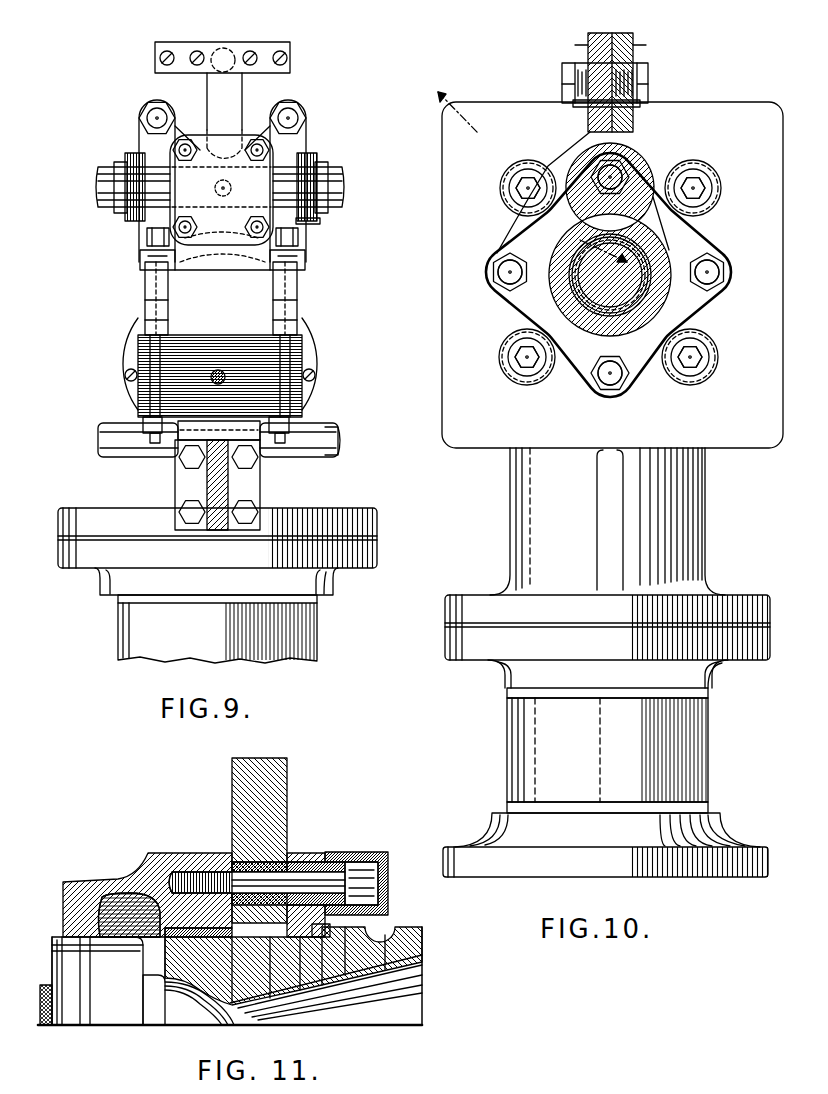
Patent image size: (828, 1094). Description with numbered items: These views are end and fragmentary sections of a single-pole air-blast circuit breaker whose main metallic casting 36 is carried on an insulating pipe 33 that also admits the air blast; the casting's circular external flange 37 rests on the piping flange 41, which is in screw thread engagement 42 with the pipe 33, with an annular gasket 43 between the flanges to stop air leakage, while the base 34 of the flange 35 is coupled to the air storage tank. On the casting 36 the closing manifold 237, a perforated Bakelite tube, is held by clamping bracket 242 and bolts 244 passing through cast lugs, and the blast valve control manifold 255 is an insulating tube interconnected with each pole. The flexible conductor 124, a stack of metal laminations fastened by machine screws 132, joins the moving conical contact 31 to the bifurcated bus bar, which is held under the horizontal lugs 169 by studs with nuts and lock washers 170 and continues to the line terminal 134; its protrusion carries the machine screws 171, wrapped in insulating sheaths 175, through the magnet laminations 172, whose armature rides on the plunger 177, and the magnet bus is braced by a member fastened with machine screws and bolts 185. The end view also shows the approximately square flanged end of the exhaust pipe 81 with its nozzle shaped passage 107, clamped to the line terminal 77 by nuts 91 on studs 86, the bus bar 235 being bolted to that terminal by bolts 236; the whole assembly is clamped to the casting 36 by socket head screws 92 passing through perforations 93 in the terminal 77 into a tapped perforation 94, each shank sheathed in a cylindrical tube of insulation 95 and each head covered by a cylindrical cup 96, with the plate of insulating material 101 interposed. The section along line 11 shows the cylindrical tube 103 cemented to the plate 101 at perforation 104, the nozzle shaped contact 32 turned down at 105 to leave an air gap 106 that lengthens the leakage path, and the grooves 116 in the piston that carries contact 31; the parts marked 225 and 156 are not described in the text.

In FIG. 9, the mounting plate 225 is at (268, 52).
In FIG. 9, the supporting bar 156 is at (242, 94).
In FIG. 9, the bolts 244 is at (186, 142).
In FIG. 9, the clamping bracket 242 is at (221, 190).
In FIG. 9, the flexible conductor 124 is at (133, 160).
In FIG. 11, the flexible conductor 124 is at (42, 1028).
In FIG. 9, the closing manifold 237 is at (328, 188).
In FIG. 9, the machine screws 132 is at (321, 220).
In FIG. 9, the nuts and lock washers 170 is at (147, 238).
In FIG. 9, the horizontal lugs 169 is at (305, 262).
In FIG. 9, the insulating sheaths 175 is at (146, 304).
In FIG. 9, the plunger 177 is at (219, 370).
In FIG. 9, the magnet laminations 172 is at (303, 356).
In FIG. 9, the blast valve control manifold 255 is at (332, 438).
In FIG. 9, the machine screws 171 is at (218, 437).
In FIG. 9, the machine screws and bolts 185 is at (189, 506).
In FIG. 9, the line terminal 134 is at (221, 526).
In FIG. 9, the external flange 37 is at (352, 509).
In FIG. 10, the external flange 37 is at (753, 591).
In FIG. 9, the annular gasket 43 is at (377, 540).
In FIG. 10, the annular gasket 43 is at (770, 625).
In FIG. 9, the piping flange 41 is at (377, 567).
In FIG. 10, the piping flange 41 is at (770, 658).
In FIG. 9, the screw thread engagement 42 is at (318, 600).
In FIG. 10, the screw thread engagement 42 is at (709, 697).
In FIG. 9, the pipe 33 is at (318, 636).
In FIG. 10, the pipe 33 is at (709, 745).
In FIG. 10, the plate of insulating material 101 is at (718, 110).
In FIG. 11, the plate of insulating material 101 is at (288, 792).
In FIG. 10, the section line 11 is at (533, 176).
In FIG. 10, the line terminal 77 is at (610, 33).
In FIG. 11, the line terminal 77 is at (292, 857).
In FIG. 10, the bus bar 235 is at (588, 50).
In FIG. 10, the bolts 236 is at (648, 81).
In FIG. 10, the exhaust pipe 81 is at (700, 222).
In FIG. 11, the exhaust pipe 81 is at (408, 948).
In FIG. 10, the nozzle shaped passage 107 is at (645, 297).
In FIG. 11, the nozzle shaped passage 107 is at (413, 978).
In FIG. 10, the contact 31 is at (610, 292).
In FIG. 11, the contact 31 is at (157, 1020).
In FIG. 10, the studs 86 is at (622, 158).
In FIG. 10, the nuts 91 is at (612, 178).
In FIG. 10, the cylindrical cup 96 is at (506, 175).
In FIG. 11, the cylindrical cup 96 is at (360, 852).
In FIG. 10, the socket head screws 92 is at (527, 190).
In FIG. 11, the socket head screws 92 is at (375, 880).
In FIG. 10, the main metallic casting 36 is at (706, 487).
In FIG. 11, the main metallic casting 36 is at (143, 857).
In FIG. 10, the flange 35 is at (722, 845).
In FIG. 10, the base 34 is at (701, 878).
In FIG. 11, the base 34 is at (331, 933).
In FIG. 11, the cylindrical tube 103 is at (140, 882).
In FIG. 11, the perforations 93 is at (310, 862).
In FIG. 11, the cylindrical tube of insulation 95 is at (298, 866).
In FIG. 11, the tapped perforation 94 is at (195, 870).
In FIG. 11, the turned down surface 105 is at (290, 986).
In FIG. 11, the contact 32 is at (228, 1028).
In FIG. 11, the perforation 104 is at (122, 1022).
In FIG. 11, the air gap 106 is at (236, 1008).
In FIG. 11, the grooves 116 is at (62, 1020).